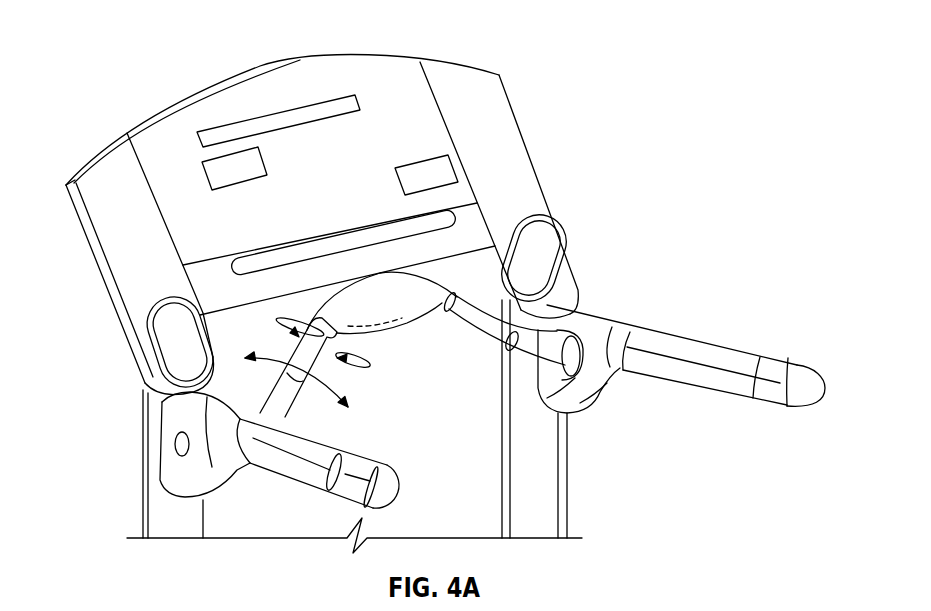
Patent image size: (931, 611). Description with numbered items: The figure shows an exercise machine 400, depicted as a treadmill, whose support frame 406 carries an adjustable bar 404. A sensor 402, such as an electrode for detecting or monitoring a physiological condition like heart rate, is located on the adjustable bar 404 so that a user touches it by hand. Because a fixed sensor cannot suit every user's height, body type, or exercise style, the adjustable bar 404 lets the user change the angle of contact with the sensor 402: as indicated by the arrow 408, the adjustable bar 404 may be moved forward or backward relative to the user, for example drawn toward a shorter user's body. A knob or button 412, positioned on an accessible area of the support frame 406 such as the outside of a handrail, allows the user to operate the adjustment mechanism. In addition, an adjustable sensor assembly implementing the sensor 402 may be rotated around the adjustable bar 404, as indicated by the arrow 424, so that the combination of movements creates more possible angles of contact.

The exercise machine 400 is at (122, 45).
The sensor 402 is at (300, 352).
The adjustable bar 404 is at (370, 272).
The support frame 406 is at (310, 485).
The arrow 408 is at (343, 393).
The knob or button 412 is at (174, 448).
The arrow 424 is at (363, 360).